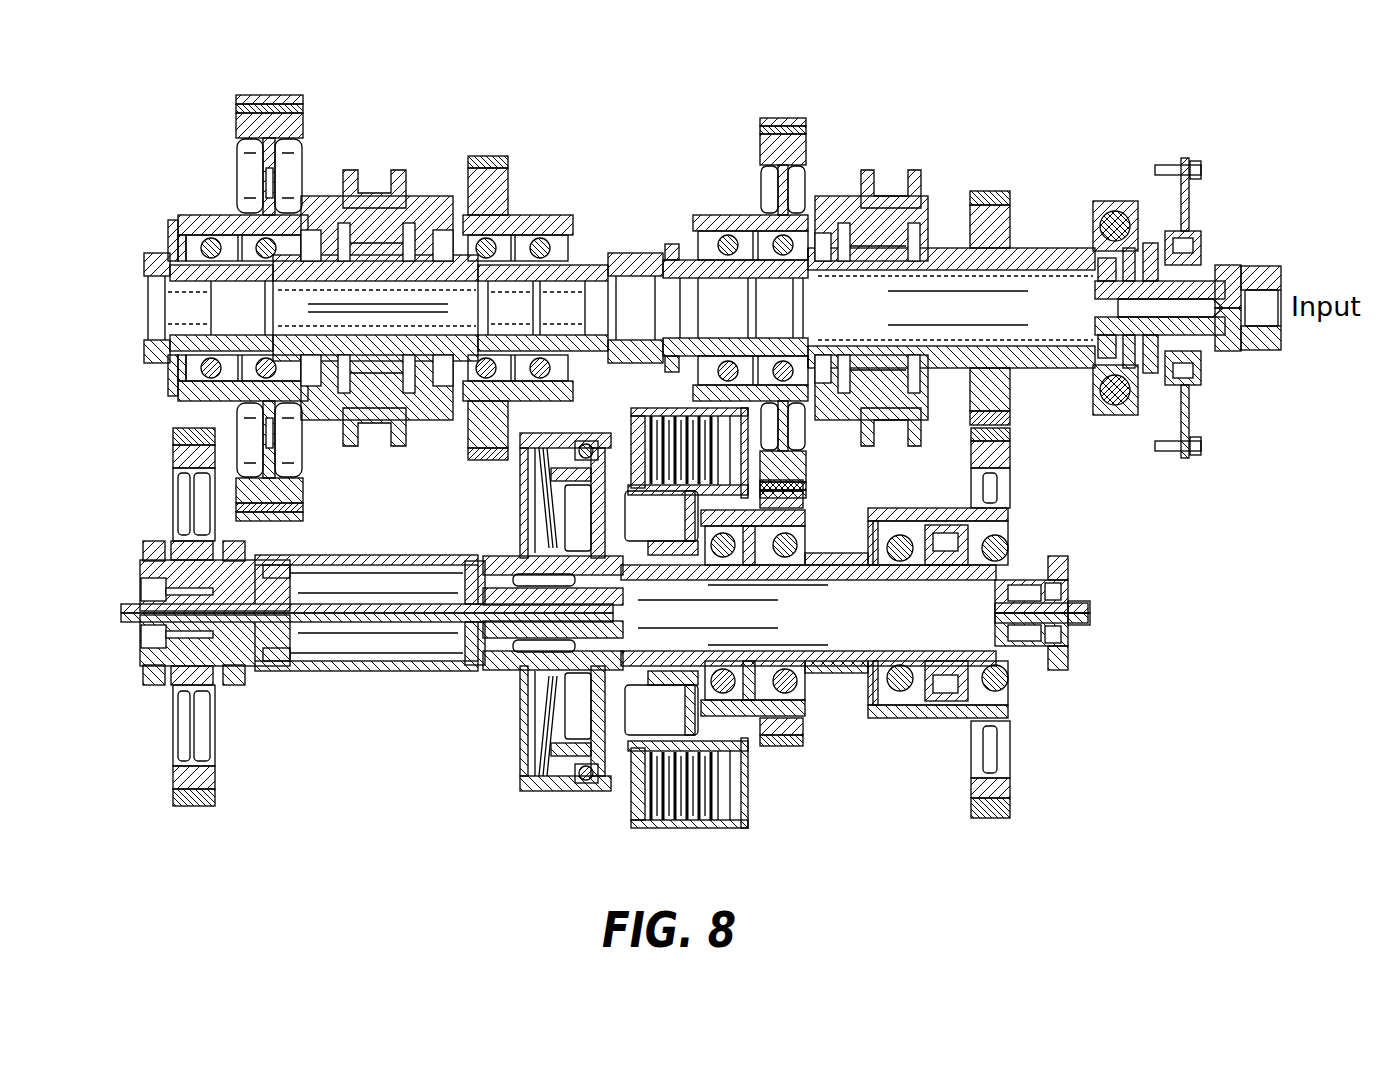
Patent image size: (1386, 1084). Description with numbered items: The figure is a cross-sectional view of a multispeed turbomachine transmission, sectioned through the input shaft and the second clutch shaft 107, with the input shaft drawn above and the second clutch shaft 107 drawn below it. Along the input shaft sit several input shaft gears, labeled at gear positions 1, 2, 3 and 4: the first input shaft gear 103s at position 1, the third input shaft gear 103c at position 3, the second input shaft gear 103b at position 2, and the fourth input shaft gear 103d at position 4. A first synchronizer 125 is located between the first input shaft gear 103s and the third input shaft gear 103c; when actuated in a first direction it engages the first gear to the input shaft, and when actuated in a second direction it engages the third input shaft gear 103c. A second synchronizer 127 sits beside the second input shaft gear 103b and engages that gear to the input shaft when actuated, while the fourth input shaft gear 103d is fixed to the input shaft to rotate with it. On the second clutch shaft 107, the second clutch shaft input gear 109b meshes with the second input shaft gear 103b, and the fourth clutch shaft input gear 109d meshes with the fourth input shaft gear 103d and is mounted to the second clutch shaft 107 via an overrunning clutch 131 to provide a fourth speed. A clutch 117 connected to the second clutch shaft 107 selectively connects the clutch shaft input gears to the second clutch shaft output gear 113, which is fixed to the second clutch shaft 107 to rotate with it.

The first gear 103s is at (233, 90).
The first gear position 1 is at (269, 77).
The first synchronizer 125 is at (372, 143).
The third gear position 3 is at (488, 137).
The third input shaft gear 103c is at (500, 160).
The second input shaft gear 103b is at (752, 128).
The second gear position 2 is at (783, 425).
The second synchronizer 127 is at (880, 151).
The fourth gear position 4 is at (990, 497).
The fourth input shaft gear 103d is at (1005, 193).
The second clutch shaft 107 is at (795, 616).
The second clutch shaft output gear 113 is at (200, 782).
The clutch 117 is at (607, 806).
The second clutch shaft input gear 109b is at (795, 738).
The overrunning clutch 131 is at (948, 660).
The fourth clutch shaft input gear 109d is at (965, 795).